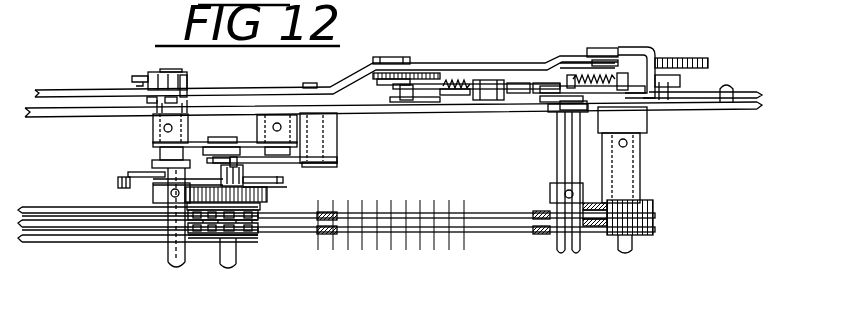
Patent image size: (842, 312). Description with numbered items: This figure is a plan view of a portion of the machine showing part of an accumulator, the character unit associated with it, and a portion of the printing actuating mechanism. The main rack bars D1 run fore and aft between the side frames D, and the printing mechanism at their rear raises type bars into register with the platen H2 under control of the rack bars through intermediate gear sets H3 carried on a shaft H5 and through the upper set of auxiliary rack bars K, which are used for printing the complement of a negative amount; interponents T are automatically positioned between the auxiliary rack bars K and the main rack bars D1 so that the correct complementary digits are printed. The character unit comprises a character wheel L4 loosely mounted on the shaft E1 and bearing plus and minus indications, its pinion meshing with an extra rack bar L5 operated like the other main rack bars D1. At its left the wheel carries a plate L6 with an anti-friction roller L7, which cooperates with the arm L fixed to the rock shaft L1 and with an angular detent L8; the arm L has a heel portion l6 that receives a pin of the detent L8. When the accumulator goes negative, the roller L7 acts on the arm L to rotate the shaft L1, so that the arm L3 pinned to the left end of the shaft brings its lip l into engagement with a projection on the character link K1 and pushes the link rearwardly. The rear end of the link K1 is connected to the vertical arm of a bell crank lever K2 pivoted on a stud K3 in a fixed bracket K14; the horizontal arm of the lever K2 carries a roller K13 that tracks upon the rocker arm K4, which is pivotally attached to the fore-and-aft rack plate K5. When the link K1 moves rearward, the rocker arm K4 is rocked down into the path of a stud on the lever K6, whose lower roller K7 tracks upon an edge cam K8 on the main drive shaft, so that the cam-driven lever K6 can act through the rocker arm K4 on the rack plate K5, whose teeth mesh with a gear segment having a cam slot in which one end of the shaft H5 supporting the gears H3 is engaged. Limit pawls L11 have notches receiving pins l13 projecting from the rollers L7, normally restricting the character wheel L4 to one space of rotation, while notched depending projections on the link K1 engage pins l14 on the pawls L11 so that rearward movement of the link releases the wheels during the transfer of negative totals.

The side frames D is at (43, 117).
The main rack bars D1 is at (138, 226).
The rock shaft L1 is at (172, 266).
The arm L3 is at (143, 79).
The extra rack bar L5 is at (44, 207).
The angular detent L8 is at (136, 173).
The limit pawls L11 is at (322, 158).
The anti-friction roller L7 is at (243, 176).
The arm L is at (245, 188).
The character wheel L4 is at (270, 202).
The plate L6 is at (277, 195).
The shaft E1 is at (224, 264).
The interponent T is at (322, 226).
The auxiliary rack bars K is at (518, 222).
The shaft H5 is at (560, 150).
The intermediate gear sets H3 is at (541, 215).
The platen H2 is at (650, 203).
The lip l is at (186, 89).
The pins l13 is at (252, 142).
The pins l14 is at (308, 83).
The heel portion l6 is at (414, 100).
The character link K1 is at (257, 89).
The bell crank lever K2 is at (567, 57).
The stud K3 is at (608, 52).
The rocker arm K4 is at (452, 90).
The rack plate K5 is at (530, 95).
The lever K6 is at (447, 80).
The roller K7 is at (403, 96).
The edge cam K8 is at (707, 54).
The roller K13 is at (492, 100).
The fixed bracket K14 is at (628, 49).